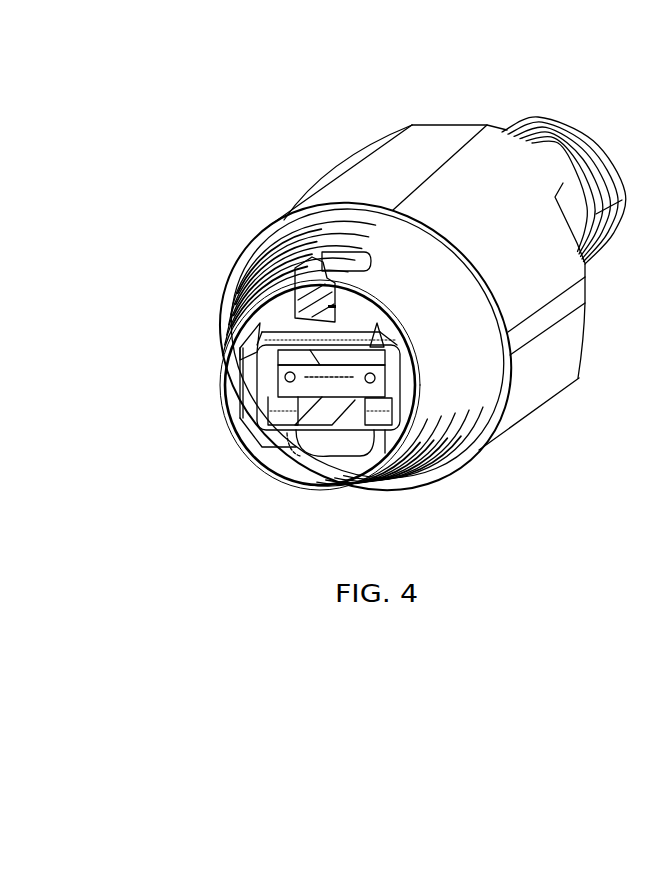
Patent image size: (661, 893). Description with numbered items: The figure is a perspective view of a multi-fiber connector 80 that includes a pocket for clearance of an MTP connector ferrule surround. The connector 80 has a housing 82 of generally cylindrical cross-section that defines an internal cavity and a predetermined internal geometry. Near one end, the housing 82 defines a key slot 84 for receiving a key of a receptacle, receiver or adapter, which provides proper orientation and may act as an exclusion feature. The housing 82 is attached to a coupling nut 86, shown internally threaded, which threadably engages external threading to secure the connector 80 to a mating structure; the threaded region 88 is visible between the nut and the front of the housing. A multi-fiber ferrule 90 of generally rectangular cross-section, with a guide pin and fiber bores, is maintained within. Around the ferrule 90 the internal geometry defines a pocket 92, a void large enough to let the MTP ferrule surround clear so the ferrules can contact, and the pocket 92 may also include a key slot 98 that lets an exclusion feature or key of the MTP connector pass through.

The multi-fiber connector 80 is at (352, 89).
The housing 82 is at (465, 353).
The key slot 84 is at (316, 274).
The coupling nut 86 is at (492, 165).
The threads 88 is at (275, 266).
The multi-fiber ferrule 90 is at (283, 387).
The pocket 92 is at (256, 366).
The key slot 98 is at (324, 442).